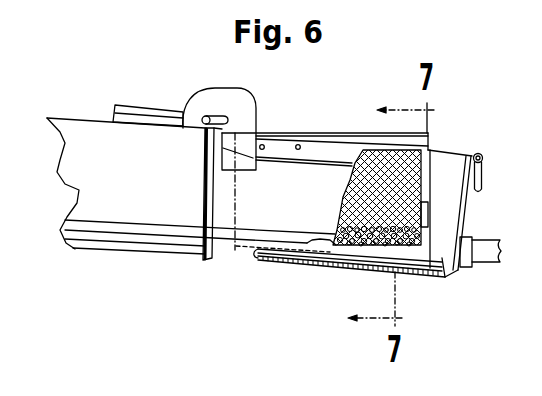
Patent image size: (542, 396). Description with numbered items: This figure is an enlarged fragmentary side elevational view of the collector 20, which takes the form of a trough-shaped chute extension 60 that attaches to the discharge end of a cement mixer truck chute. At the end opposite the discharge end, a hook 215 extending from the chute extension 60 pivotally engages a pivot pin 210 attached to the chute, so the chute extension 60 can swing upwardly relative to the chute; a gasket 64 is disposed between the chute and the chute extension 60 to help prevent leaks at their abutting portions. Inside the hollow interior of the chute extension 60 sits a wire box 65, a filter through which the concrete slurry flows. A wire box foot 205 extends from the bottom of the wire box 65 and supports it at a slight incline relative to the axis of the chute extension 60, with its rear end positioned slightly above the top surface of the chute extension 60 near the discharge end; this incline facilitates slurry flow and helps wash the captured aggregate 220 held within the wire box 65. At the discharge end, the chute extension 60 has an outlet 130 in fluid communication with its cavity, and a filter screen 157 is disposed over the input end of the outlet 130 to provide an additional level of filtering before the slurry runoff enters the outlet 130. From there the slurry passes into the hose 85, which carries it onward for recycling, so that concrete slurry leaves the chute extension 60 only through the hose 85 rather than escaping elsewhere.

The collector 20 is at (300, 274).
The chute extension 60 is at (226, 240).
The gasket 64 is at (203, 258).
The wire box 65 is at (430, 140).
The hose 85 is at (483, 263).
The outlet 130 is at (466, 242).
The filter screen 157 is at (439, 244).
The wire box foot 205 is at (428, 270).
The pivot pin 210 is at (215, 118).
The hook 215 is at (194, 88).
The captured aggregate 220 is at (357, 246).